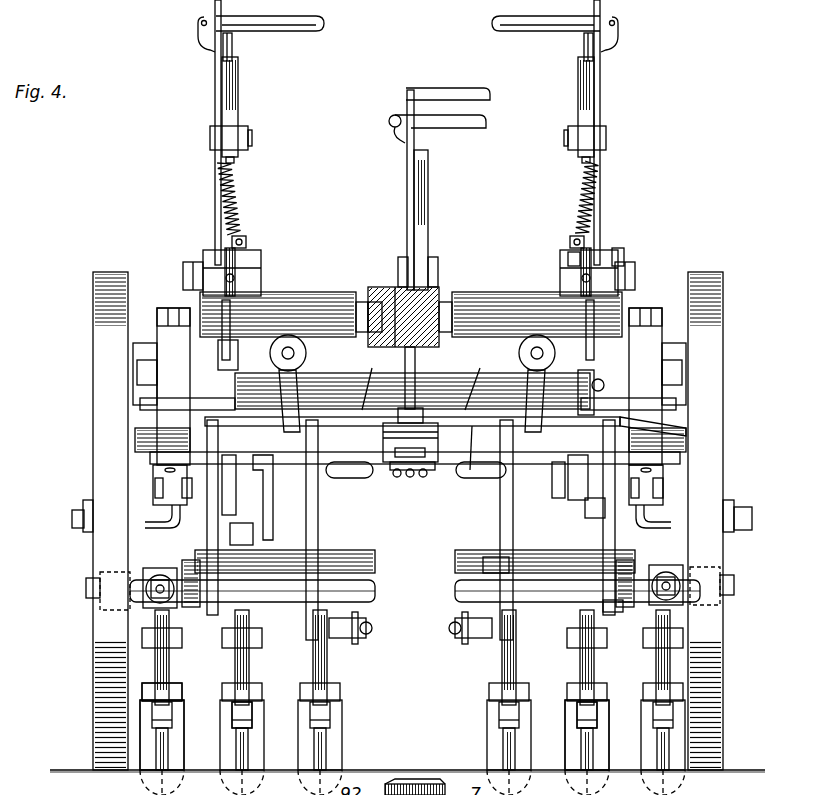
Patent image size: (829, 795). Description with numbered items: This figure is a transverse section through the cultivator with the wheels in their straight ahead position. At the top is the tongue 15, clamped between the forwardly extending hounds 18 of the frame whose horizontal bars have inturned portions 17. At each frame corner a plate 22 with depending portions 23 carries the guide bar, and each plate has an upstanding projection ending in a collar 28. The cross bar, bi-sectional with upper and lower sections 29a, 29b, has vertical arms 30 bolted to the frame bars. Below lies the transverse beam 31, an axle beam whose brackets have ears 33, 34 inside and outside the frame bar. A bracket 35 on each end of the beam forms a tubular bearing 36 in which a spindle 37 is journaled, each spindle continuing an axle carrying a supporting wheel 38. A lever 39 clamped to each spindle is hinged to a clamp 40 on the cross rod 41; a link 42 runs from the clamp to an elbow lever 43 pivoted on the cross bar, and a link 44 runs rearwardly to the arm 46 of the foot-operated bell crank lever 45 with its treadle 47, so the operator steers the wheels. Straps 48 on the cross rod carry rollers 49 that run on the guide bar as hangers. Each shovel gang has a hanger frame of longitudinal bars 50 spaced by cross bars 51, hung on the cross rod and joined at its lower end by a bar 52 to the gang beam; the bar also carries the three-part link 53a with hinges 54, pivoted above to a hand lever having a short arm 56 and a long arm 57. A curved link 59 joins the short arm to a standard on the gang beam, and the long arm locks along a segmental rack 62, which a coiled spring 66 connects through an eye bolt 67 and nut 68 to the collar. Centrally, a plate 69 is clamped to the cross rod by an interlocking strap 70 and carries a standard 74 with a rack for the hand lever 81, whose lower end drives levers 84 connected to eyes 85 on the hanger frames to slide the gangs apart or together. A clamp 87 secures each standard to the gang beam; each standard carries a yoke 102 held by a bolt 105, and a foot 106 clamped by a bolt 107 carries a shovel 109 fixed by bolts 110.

The tongue 15 is at (392, 290).
The inturned portions 17 is at (308, 300).
The hounds 18 is at (455, 300).
The plate 22 is at (222, 318).
The depending portions 23 is at (604, 386).
The collar 28 is at (258, 266).
The upper section 29a is at (412, 388).
The lower section 29b is at (486, 380).
The arms 30 is at (580, 392).
The transverse beam 31 is at (322, 365).
The ear 33 is at (570, 255).
The ear 34 is at (624, 252).
The bracket 35 is at (165, 409).
The tubular section or bearing 36 is at (133, 360).
The spindle 37 is at (172, 308).
The supporting wheels 38 is at (93, 489).
The lever 39 is at (165, 495).
The clamp 40 is at (135, 441).
The cross rod 41 is at (688, 430).
The link 42 is at (236, 472).
The elbow lever 43 is at (470, 472).
The link 44 is at (266, 495).
The bell crank lever 45 is at (580, 660).
The arm 46 is at (268, 534).
The treadle 47 is at (360, 642).
The straps 48 is at (330, 478).
The rollers 49 is at (300, 340).
The longitudinal bars 50 is at (495, 563).
The cross bars 51 is at (320, 560).
The bar 52 is at (345, 590).
The three-part link 53a is at (587, 511).
The hinges 54 is at (640, 510).
The short arm 56 is at (224, 352).
The long arm 57 is at (220, 66).
The curved link 59 is at (190, 265).
The segmental rack 62 is at (222, 153).
The coiled spring 66 is at (222, 190).
The eye bolt 67 is at (243, 236).
The nut 68 is at (240, 276).
The plate 69 is at (438, 437).
The interlocking strap 70 is at (420, 452).
The standard 74 is at (416, 364).
The hand lever 81 is at (408, 213).
The levers 84 is at (400, 477).
The eyes 85 is at (420, 490).
The clamp 87 is at (162, 568).
The yoke 102 is at (255, 656).
The bolt 105 is at (182, 634).
The foot 106 is at (182, 681).
The bolt 107 is at (498, 701).
The shovels 109 is at (176, 765).
The bolts 110 is at (250, 713).